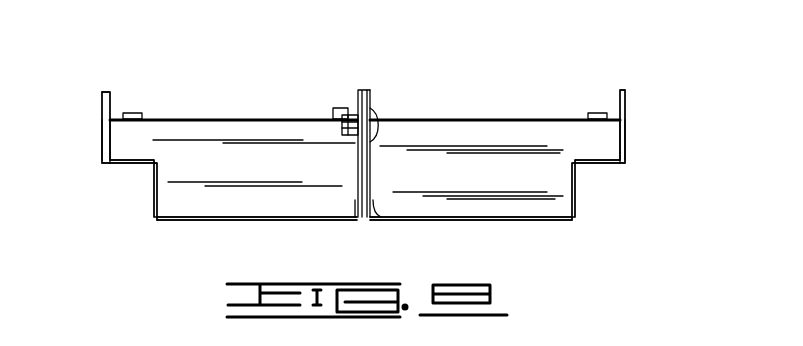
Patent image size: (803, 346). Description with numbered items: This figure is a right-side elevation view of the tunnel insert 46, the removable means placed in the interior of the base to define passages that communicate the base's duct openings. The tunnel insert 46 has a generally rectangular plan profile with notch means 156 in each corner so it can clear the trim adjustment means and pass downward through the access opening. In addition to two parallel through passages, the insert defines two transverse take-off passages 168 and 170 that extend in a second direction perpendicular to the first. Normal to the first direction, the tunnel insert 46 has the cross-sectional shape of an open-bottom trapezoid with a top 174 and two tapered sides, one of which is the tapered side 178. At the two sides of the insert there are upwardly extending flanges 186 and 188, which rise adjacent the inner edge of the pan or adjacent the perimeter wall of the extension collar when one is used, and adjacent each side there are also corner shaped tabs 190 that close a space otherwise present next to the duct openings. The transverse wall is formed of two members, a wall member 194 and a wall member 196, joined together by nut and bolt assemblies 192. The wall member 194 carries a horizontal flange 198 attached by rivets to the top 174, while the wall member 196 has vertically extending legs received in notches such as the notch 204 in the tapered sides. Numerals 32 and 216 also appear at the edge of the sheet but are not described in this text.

The tunnel insert 46 is at (548, 60).
The notch means 156 is at (157, 190).
The transverse take-off passage 168 is at (190, 102).
The transverse take-off passage 170 is at (491, 101).
The top 174 is at (548, 117).
The tapered side 178 is at (233, 197).
The upwardly extending flange 186 is at (102, 96).
The upwardly extending flange 188 is at (625, 103).
The corner shaped tab 190 is at (106, 143).
The nut and bolt assembly 192 is at (380, 120).
The wall member 194 is at (358, 91).
The wall member 196 is at (367, 91).
The horizontal flange 198 is at (333, 112).
The notch 204 is at (372, 217).
The adjacent figure element 32 is at (118, 345).
The adjacent figure element 216 is at (51, 341).